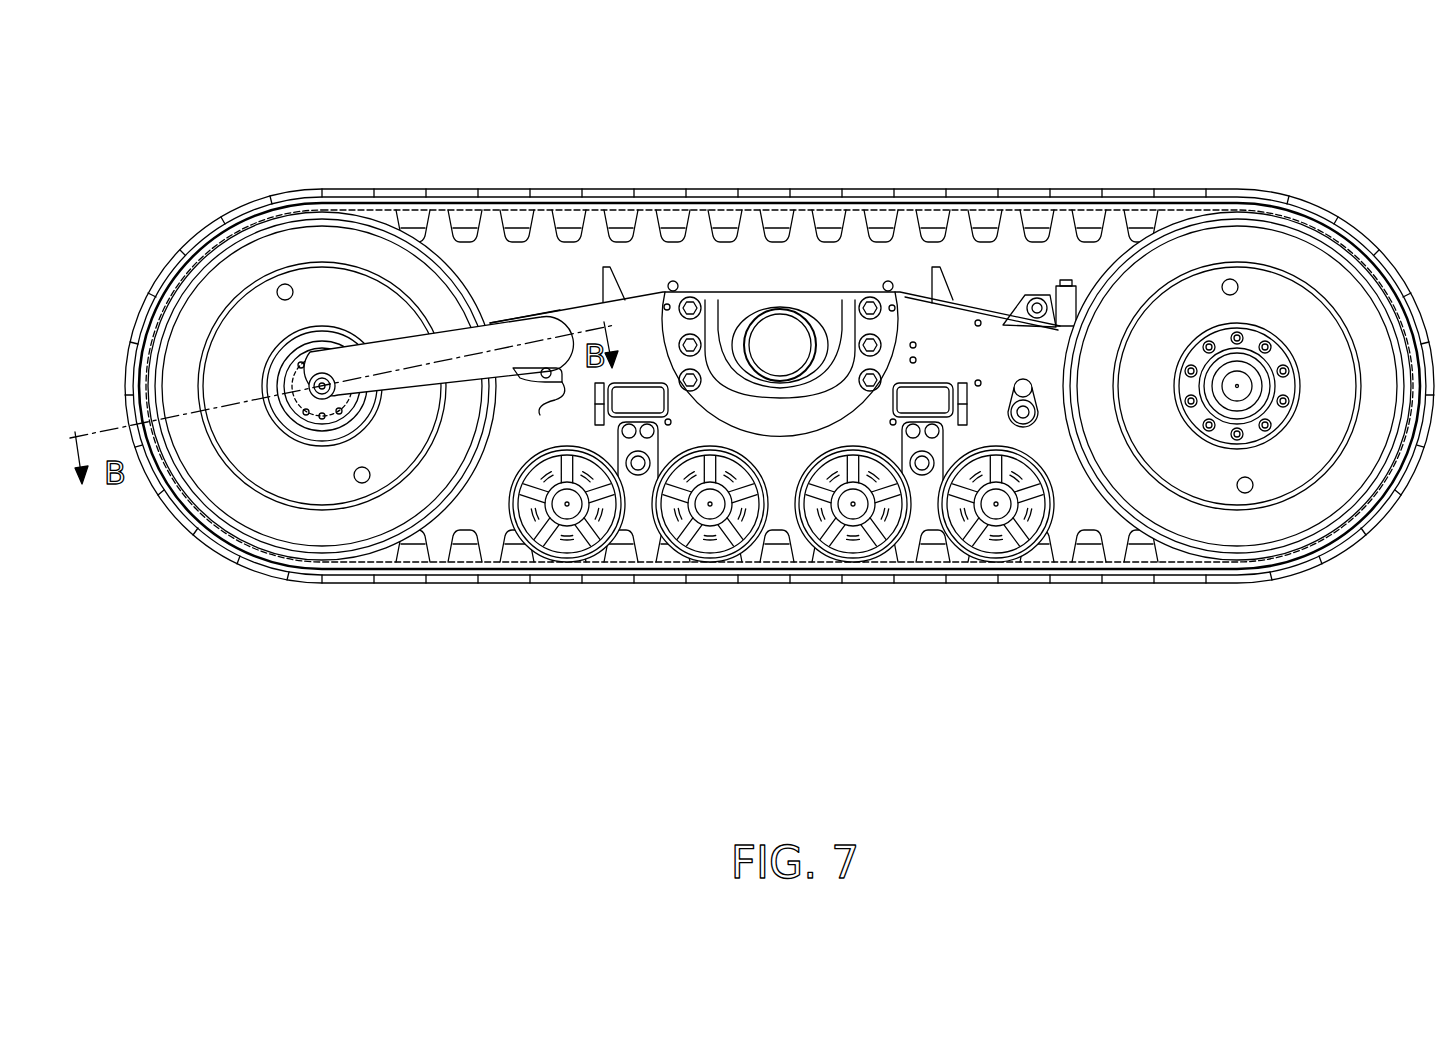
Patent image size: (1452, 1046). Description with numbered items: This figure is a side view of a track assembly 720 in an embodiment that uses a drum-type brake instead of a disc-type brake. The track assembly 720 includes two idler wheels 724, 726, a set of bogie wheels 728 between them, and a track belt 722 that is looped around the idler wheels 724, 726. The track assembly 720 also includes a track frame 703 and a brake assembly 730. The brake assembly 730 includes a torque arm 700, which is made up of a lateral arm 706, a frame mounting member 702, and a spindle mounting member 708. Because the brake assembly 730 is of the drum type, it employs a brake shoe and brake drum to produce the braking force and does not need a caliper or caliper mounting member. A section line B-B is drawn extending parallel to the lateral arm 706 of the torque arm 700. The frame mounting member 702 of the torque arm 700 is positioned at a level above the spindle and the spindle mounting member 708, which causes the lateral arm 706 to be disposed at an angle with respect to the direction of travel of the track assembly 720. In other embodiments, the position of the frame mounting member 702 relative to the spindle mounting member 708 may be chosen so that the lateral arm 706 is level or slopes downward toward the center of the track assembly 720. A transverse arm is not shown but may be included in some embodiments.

The torque arm 700 is at (505, 310).
The frame mounting member 702 is at (562, 383).
The track frame 703 is at (590, 300).
The lateral arm 706 is at (447, 369).
The spindle mounting member 708 is at (328, 400).
The track assembly 720 is at (825, 147).
The track belt 722 is at (1023, 190).
The idler wheel 724 is at (213, 475).
The idler wheel 726 is at (1255, 530).
The bogie wheels 728 is at (567, 548).
The brake assembly 730 is at (345, 327).